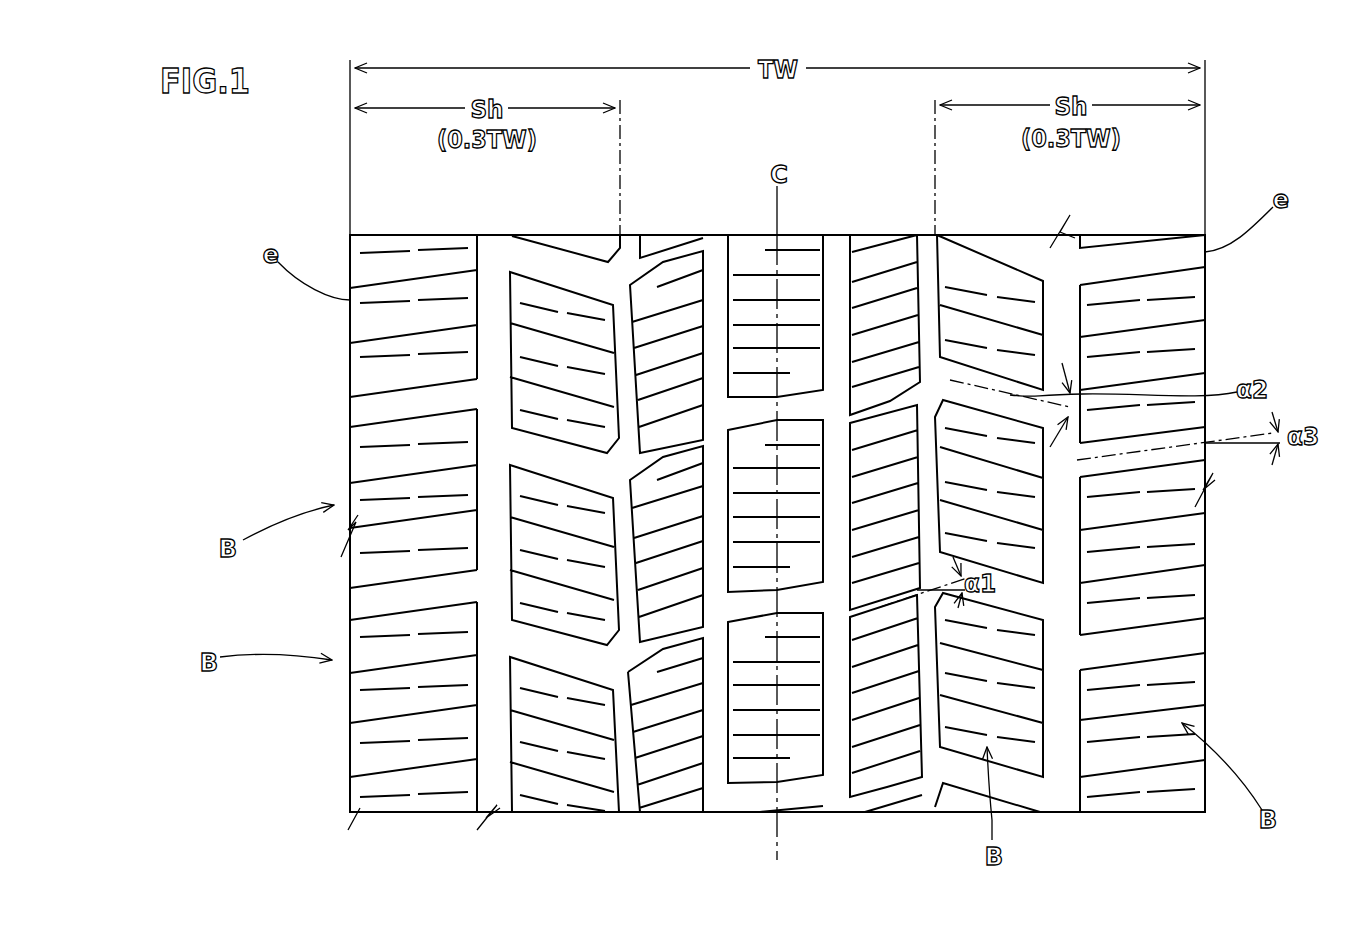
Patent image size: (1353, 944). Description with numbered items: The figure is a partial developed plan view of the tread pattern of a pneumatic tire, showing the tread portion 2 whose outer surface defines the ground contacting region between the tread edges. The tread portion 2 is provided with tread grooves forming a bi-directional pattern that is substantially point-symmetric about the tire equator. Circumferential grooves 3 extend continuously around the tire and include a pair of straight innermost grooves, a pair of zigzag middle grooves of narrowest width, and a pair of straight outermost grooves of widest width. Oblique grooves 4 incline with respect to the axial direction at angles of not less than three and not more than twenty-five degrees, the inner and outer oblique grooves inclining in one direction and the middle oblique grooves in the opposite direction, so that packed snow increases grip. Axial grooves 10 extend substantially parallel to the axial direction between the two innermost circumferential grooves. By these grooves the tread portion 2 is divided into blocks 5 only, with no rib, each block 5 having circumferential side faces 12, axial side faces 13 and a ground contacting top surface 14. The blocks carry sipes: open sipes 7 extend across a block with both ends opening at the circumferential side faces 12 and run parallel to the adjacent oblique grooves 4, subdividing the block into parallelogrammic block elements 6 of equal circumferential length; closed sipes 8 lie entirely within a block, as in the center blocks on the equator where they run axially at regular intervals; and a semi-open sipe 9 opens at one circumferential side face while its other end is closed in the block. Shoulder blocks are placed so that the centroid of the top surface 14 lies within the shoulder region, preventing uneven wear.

The tread portion 2 is at (1165, 225).
The circumferential grooves 3 is at (492, 278).
The oblique grooves 4 is at (407, 398).
The blocks 5 is at (393, 243).
The block elements 6 is at (360, 735).
The open sipes 7 is at (385, 732).
The closed sipes 8 is at (378, 750).
The semi-open sipe 9 is at (690, 636).
The axial grooves 10 is at (747, 410).
The circumferential side faces 12 is at (930, 715).
The axial side faces 13 is at (410, 770).
The ground contacting top surface 14 is at (1020, 673).